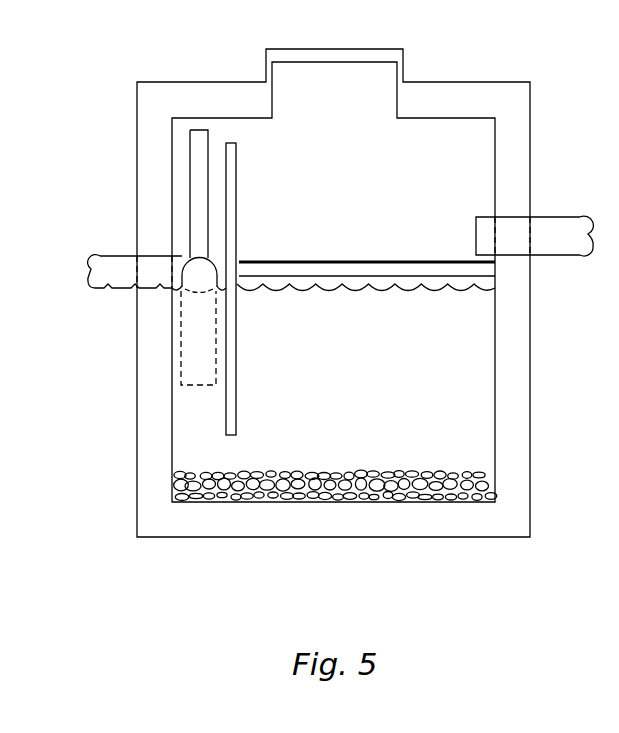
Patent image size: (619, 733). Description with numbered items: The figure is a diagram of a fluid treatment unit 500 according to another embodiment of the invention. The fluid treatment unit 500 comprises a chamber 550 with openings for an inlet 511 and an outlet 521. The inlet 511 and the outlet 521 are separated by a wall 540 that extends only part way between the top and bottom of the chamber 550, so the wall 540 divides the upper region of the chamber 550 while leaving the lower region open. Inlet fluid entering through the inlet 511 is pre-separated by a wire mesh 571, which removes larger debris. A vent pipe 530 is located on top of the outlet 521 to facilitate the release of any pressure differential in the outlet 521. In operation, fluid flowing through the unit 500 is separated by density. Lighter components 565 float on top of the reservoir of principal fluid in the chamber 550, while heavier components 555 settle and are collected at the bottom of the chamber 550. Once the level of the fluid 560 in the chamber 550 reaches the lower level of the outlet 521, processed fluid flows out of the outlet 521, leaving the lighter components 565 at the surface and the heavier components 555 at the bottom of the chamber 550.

The fluid treatment unit 500 is at (352, 593).
The inlet 511 is at (556, 217).
The outlet 521 is at (112, 256).
The vent pipe 530 is at (199, 130).
The wall 540 is at (237, 165).
The chamber 550 is at (357, 408).
The heavier components 555 is at (413, 469).
The fluid 560 is at (436, 290).
The lighter components 565 is at (353, 283).
The wire mesh 571 is at (294, 262).